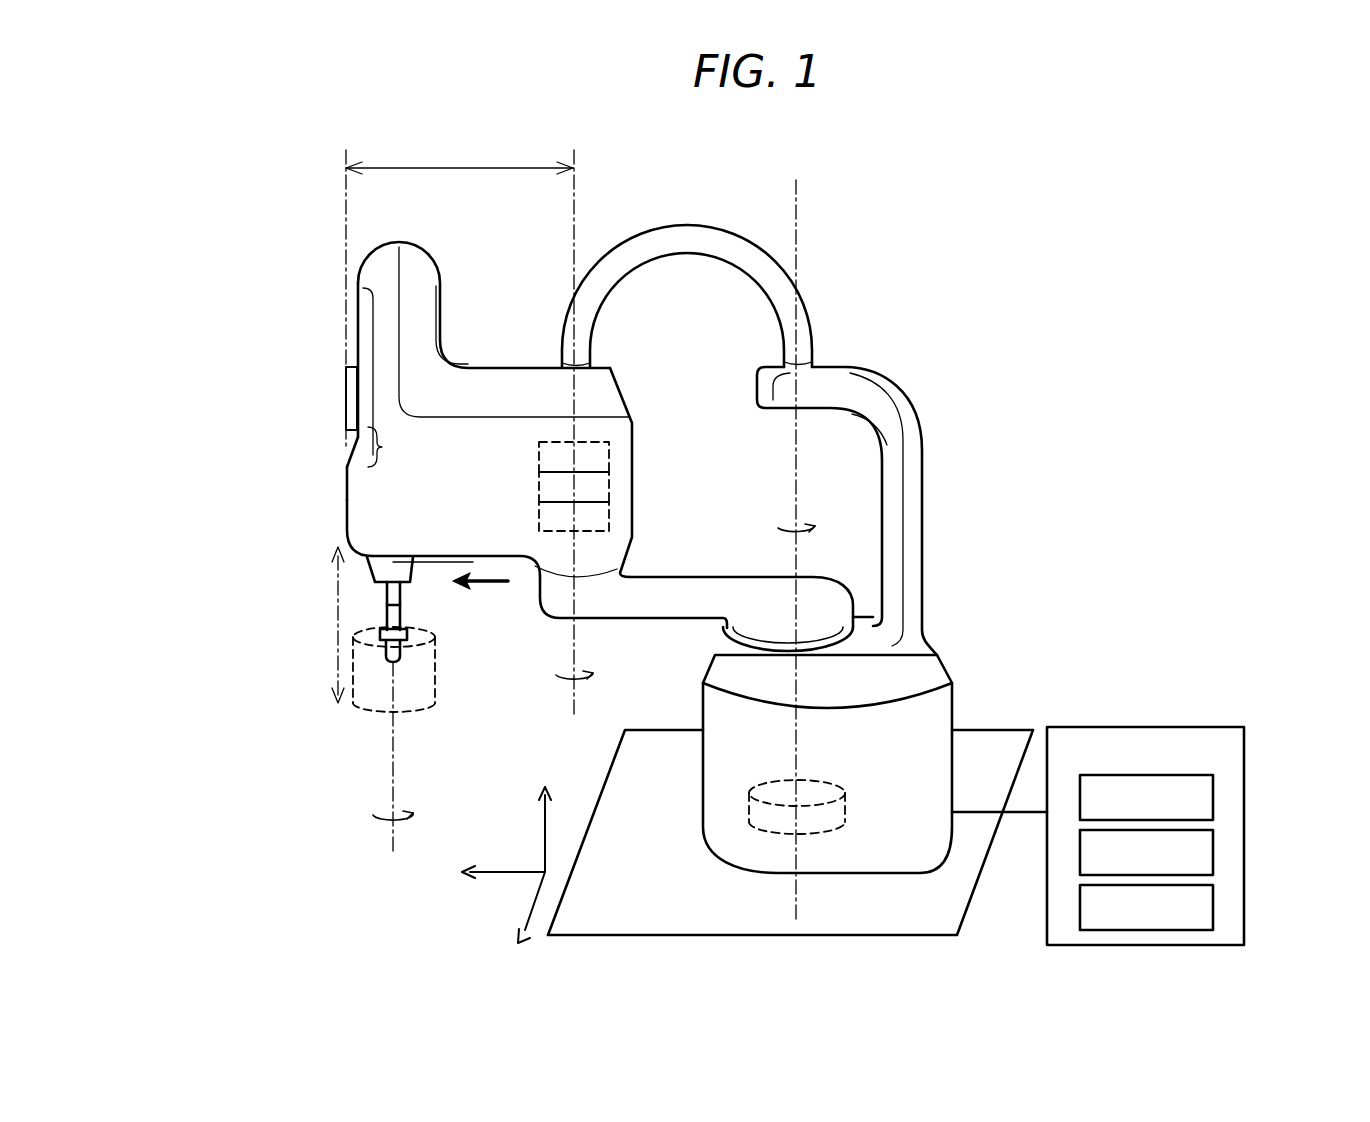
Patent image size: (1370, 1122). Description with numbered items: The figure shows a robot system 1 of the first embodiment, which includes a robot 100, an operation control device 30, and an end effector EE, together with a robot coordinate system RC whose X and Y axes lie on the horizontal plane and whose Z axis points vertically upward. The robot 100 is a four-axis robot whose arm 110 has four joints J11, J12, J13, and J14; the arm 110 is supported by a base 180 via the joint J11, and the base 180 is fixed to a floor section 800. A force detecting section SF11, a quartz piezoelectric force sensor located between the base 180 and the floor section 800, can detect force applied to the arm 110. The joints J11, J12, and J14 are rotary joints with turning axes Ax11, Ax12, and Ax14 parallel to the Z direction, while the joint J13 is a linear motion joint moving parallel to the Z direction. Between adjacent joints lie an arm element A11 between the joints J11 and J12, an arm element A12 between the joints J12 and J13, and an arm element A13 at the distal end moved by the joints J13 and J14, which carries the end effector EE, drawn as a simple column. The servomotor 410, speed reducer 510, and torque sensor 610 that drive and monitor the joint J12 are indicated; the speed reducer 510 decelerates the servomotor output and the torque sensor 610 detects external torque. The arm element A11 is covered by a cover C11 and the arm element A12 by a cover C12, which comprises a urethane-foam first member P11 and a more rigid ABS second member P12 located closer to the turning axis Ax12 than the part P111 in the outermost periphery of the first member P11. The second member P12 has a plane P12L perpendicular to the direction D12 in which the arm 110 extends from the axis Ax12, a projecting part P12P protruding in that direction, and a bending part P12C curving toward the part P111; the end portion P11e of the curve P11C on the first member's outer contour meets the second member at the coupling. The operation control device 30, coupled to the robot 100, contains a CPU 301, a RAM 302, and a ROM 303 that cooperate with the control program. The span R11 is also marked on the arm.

The robot system 1 is at (1015, 332).
The robot 100 is at (815, 288).
The arm 110 is at (270, 655).
The base 180 is at (953, 704).
The floor section 800 is at (942, 903).
The operation control device 30 is at (1161, 760).
The CPU 301 is at (1213, 797).
The RAM 302 is at (1213, 852).
The ROM 303 is at (1213, 907).
The torque sensor 610 is at (610, 457).
The servomotor 410 is at (610, 486).
The speed reducer 510 is at (610, 515).
The arm element A11 is at (657, 575).
The arm element A12 is at (513, 367).
The arm element A13 is at (398, 615).
The cover C11 is at (611, 610).
The cover C12 is at (420, 272).
The turning axis Ax11 is at (798, 191).
The turning axis Ax12 is at (575, 707).
The turning axis Ax14 is at (394, 757).
The joint J11 is at (777, 531).
The joint J12 is at (595, 676).
The joint J13 is at (338, 608).
The joint J14 is at (373, 816).
The arm length R11 is at (459, 295).
The direction D12 is at (495, 585).
The end effector EE is at (436, 691).
The robot coordinate system RC is at (590, 853).
The force detecting section SF11 is at (768, 824).
The first member P11 is at (347, 503).
The part in the outermost periphery P111 is at (347, 528).
The curve P11C is at (362, 477).
The end portion P11e is at (360, 350).
The second member P12 is at (399, 447).
The plane P12L is at (358, 318).
The projecting part P12P is at (347, 395).
The bending part P12C is at (352, 450).